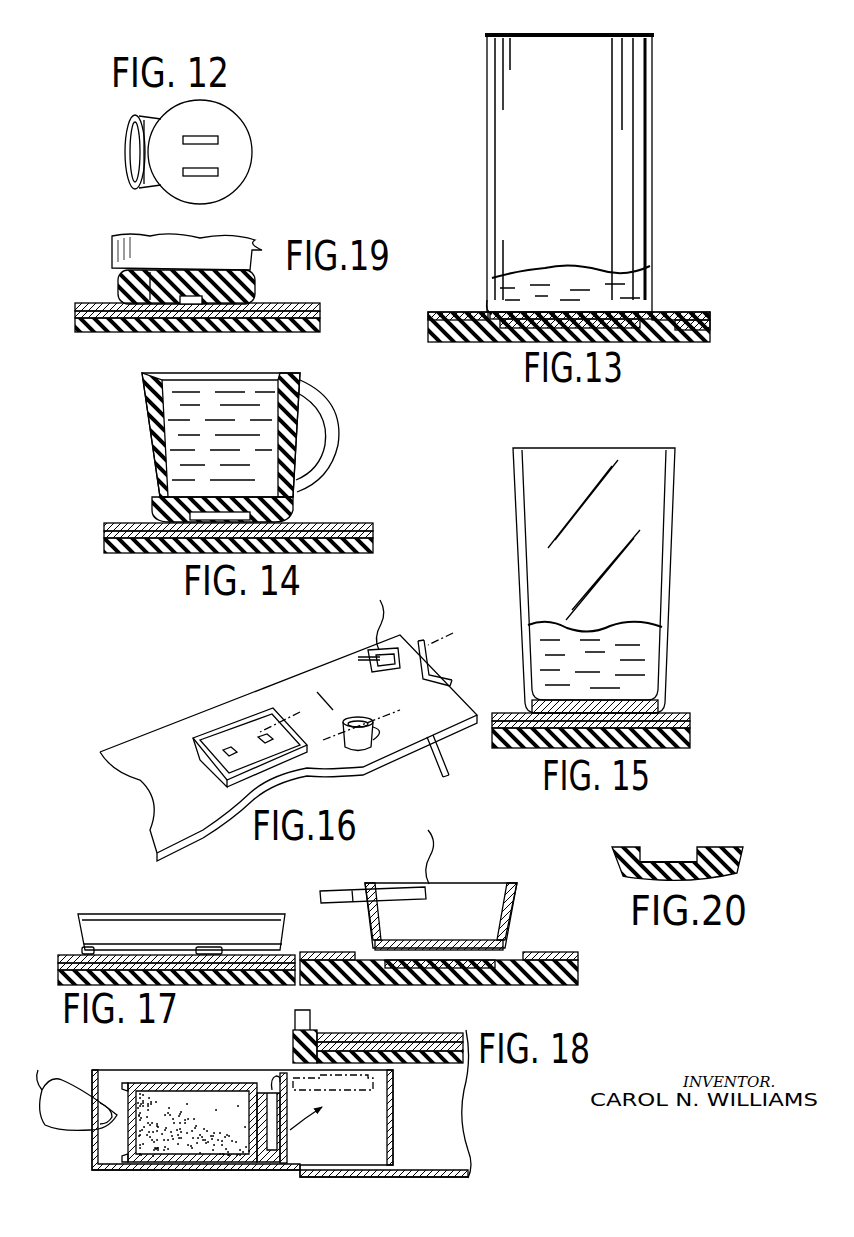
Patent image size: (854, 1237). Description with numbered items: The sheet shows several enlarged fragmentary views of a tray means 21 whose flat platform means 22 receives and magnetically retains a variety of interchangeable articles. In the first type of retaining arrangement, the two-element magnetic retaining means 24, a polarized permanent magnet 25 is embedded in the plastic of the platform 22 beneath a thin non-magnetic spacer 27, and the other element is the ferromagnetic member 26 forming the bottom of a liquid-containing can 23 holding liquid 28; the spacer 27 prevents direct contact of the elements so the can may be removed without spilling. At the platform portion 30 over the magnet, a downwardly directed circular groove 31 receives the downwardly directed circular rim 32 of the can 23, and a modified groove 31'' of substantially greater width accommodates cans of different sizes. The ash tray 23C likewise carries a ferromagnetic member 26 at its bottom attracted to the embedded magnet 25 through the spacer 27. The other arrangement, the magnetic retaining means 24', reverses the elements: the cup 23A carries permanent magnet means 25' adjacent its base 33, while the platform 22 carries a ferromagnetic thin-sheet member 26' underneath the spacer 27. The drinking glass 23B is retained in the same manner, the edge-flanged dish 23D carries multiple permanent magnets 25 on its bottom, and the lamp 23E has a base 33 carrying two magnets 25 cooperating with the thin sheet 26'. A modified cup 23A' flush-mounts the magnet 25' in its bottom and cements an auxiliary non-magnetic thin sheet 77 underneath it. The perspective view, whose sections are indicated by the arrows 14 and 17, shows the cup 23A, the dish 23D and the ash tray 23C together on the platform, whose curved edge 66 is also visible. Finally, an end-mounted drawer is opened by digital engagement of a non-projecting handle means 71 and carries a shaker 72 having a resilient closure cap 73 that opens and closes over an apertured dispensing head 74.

In FIG. 16, the section arrows 14— 14 is at (323, 748).
In FIG. 16, the section arrows 17— 17 is at (451, 629).
In FIG. 19, the tray means 21 is at (322, 302).
In FIG. 13, the tray means 21 is at (408, 325).
In FIG. 14, the tray means 21 is at (395, 536).
In FIG. 15, the tray means 21 is at (714, 750).
In FIG. 16, the tray means 21 is at (138, 708).
In FIG. 17, the tray means 21 is at (62, 955).
In FIG. 18, the tray means 21 is at (288, 1045).
In FIG. 20, the tray means 21 is at (752, 861).
In FIG. 19, the table or platform means 22 is at (272, 305).
In FIG. 13, the table or platform means 22 is at (436, 311).
In FIG. 14, the table or platform means 22 is at (366, 521).
In FIG. 15, the table or platform means 22 is at (672, 710).
In FIG. 16, the table or platform means 22 is at (146, 788).
In FIG. 17, the table or platform means 22 is at (289, 949).
In FIG. 18, the table or platform means 22 is at (410, 1034).
In FIG. 20, the table or platform means 22 is at (631, 846).
In FIG. 13, the ferromagnetic liquid-containing can 23 is at (658, 156).
In FIG. 14, the cup 23A is at (258, 425).
In FIG. 16, the cup 23A is at (383, 757).
In FIG. 19, the modified cup article 23A' is at (205, 240).
In FIG. 15, the drinking glass 23B is at (680, 580).
In FIG. 16, the ash tray 23C is at (384, 639).
In FIG. 18, the ash tray 23C is at (516, 911).
In FIG. 16, the edge-flanged dish 23D is at (244, 710).
In FIG. 17, the edge-flanged dish 23D is at (220, 913).
In FIG. 12, the lamp 23E is at (262, 132).
In FIG. 13, the two-element magnetic retaining means 24 is at (569, 354).
In FIG. 18, the two-element magnetic retaining means 24 is at (439, 992).
In FIG. 14, the magnetic retaining means 24' is at (230, 560).
In FIG. 15, the magnetic retaining means 24' is at (589, 758).
In FIG. 12, the permanent magnet 25 is at (224, 159).
In FIG. 13, the permanent magnet 25 is at (589, 353).
In FIG. 18, the permanent magnet 25 is at (440, 983).
In FIG. 19, the permanent magnet means 25' is at (199, 270).
In FIG. 14, the permanent magnet means 25' is at (249, 500).
In FIG. 15, the permanent magnet means 25' is at (625, 685).
In FIG. 17, the permanent magnet means 25' is at (151, 920).
In FIG. 13, the ferromagnetic member 26 is at (594, 292).
In FIG. 18, the ferromagnetic member 26 is at (439, 940).
In FIG. 19, the ferromagnetic thin-sheet member 26' is at (197, 332).
In FIG. 14, the ferromagnetic thin-sheet member 26' is at (238, 518).
In FIG. 15, the ferromagnetic thin-sheet member 26' is at (612, 721).
In FIG. 17, the ferromagnetic thin-sheet member 26' is at (176, 985).
In FIG. 13, the non-magnetic spacer means 27 is at (640, 318).
In FIG. 14, the non-magnetic spacer means 27 is at (205, 512).
In FIG. 15, the non-magnetic spacer means 27 is at (690, 721).
In FIG. 17, the non-magnetic spacer means 27 is at (225, 955).
In FIG. 18, the non-magnetic spacer means 27 is at (462, 957).
In FIG. 13, the liquid 28 is at (552, 275).
In FIG. 13, the platform portion having embedded magnet 30 is at (486, 301).
In FIG. 16, the platform portion having embedded magnet 30 is at (410, 655).
In FIG. 13, the circular groove means 31 is at (549, 298).
In FIG. 20, the widened groove 31'' is at (670, 839).
In FIG. 13, the circular rim means 32 is at (650, 330).
In FIG. 12, the base 33 is at (241, 170).
In FIG. 19, the base 33 is at (118, 284).
In FIG. 14, the base 33 is at (160, 507).
In FIG. 16, the curved front edge 66 is at (276, 778).
In FIG. 18, the handle means 71 is at (100, 1100).
In FIG. 18, the shaker 72 is at (176, 1082).
In FIG. 18, the resilient closure cap 73 is at (282, 1147).
In FIG. 18, the apertured dispensing head 74 is at (258, 1134).
In FIG. 19, the non-magnetic thin sheet 77 is at (165, 291).